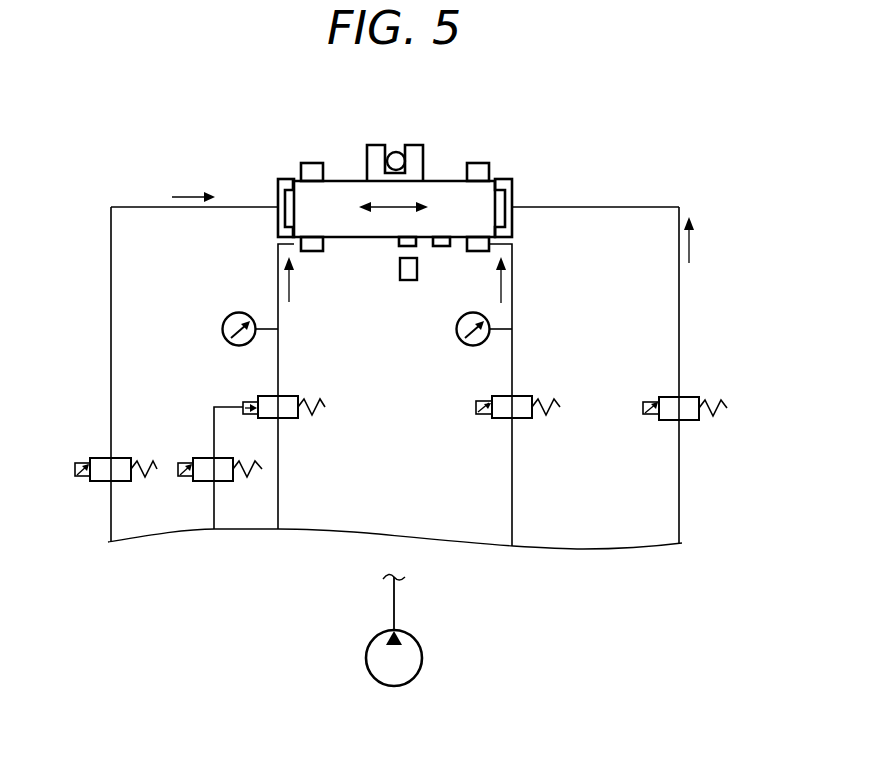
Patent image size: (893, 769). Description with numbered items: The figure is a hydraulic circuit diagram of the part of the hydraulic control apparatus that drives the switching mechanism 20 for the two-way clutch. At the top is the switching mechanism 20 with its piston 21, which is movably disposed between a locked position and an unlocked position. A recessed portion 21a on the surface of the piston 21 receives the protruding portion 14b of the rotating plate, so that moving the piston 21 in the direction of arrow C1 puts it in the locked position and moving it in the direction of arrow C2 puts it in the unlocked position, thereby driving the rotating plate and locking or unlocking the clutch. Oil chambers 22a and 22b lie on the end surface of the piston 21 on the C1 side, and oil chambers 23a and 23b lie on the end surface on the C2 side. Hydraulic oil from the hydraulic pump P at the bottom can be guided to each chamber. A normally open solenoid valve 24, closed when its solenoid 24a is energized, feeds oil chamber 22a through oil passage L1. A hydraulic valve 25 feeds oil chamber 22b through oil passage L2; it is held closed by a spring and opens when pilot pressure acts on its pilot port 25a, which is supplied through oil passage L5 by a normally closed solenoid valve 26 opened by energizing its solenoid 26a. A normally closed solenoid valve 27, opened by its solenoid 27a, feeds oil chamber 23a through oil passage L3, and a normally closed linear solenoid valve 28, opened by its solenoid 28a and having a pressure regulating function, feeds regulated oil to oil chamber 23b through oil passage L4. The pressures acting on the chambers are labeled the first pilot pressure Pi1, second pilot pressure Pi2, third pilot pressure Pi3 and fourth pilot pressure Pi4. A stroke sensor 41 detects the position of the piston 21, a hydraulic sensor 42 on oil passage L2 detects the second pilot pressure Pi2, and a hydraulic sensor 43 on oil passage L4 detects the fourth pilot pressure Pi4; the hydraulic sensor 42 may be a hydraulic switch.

The switching mechanism 20 is at (380, 165).
The piston 21 is at (458, 178).
The recessed portion 21a is at (390, 155).
The protruding portion 14b is at (397, 153).
The oil chamber 22a is at (278, 186).
The oil chamber 22b is at (312, 173).
The oil chamber 23a is at (507, 197).
The oil chamber 23b is at (481, 170).
The stroke sensor 41 is at (400, 270).
The hydraulic sensor 42 is at (228, 318).
The hydraulic sensor 43 is at (456, 337).
The solenoid valve 24 is at (102, 465).
The solenoid 24a is at (82, 477).
The hydraulic valve 25 is at (250, 380).
The pilot port 25a is at (252, 400).
The solenoid valve 26 is at (206, 465).
The solenoid 26a is at (185, 477).
The solenoid valve 27 is at (675, 402).
The solenoid 27a is at (650, 417).
The linear solenoid valve 28 is at (503, 412).
The solenoid 28a is at (483, 418).
The oil passage L1 is at (111, 248).
The oil passage L2 is at (277, 268).
The oil passage L3 is at (679, 297).
The oil passage L4 is at (512, 273).
The oil passage L5 is at (215, 430).
The first pilot pressure Pi1 is at (193, 185).
The second pilot pressure Pi2 is at (306, 279).
The third pilot pressure Pi3 is at (706, 240).
The fourth pilot pressure Pi4 is at (484, 280).
The arrow C1 is at (373, 207).
The arrow C2 is at (440, 207).
The hydraulic pump P is at (422, 662).